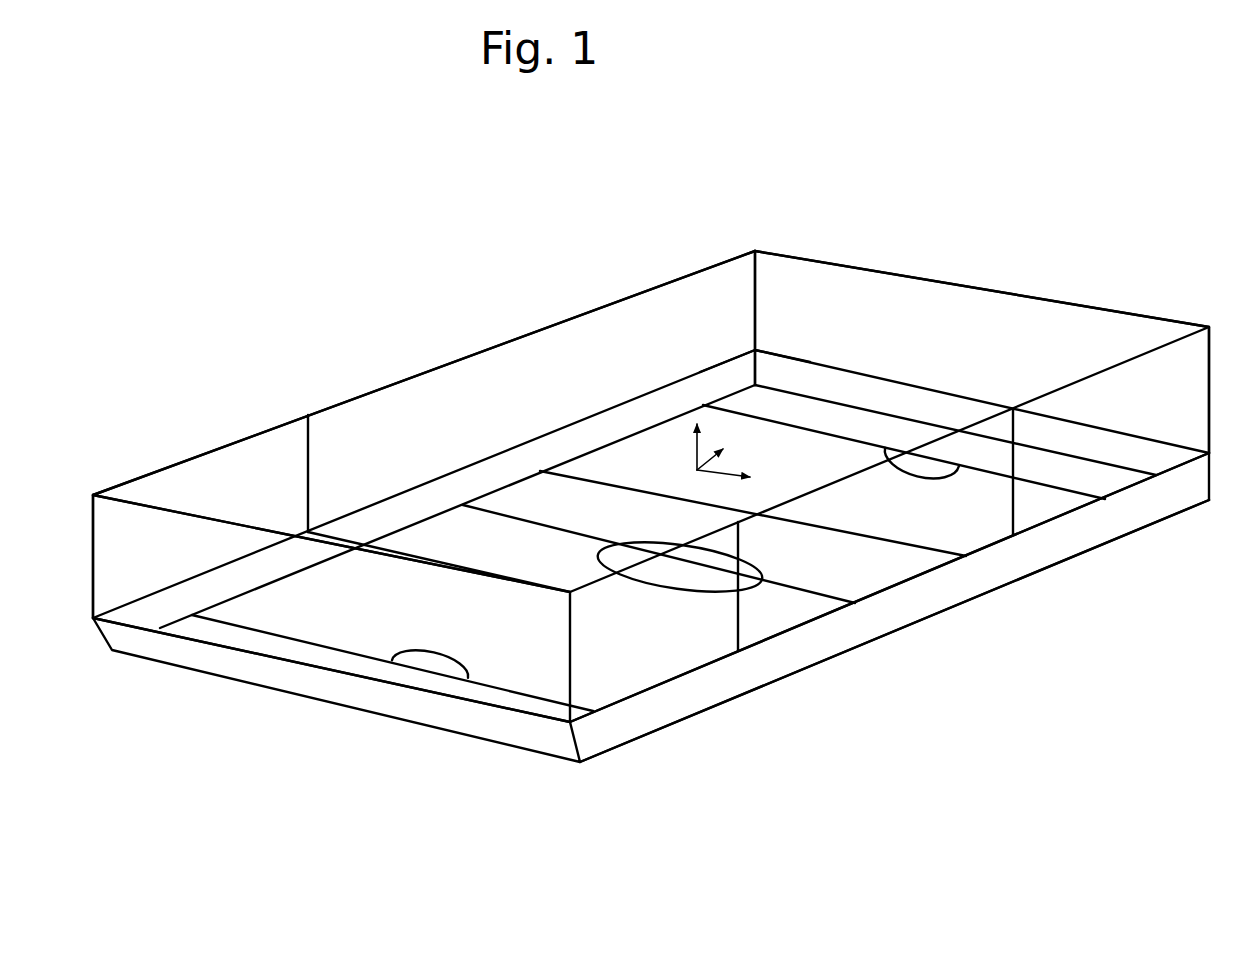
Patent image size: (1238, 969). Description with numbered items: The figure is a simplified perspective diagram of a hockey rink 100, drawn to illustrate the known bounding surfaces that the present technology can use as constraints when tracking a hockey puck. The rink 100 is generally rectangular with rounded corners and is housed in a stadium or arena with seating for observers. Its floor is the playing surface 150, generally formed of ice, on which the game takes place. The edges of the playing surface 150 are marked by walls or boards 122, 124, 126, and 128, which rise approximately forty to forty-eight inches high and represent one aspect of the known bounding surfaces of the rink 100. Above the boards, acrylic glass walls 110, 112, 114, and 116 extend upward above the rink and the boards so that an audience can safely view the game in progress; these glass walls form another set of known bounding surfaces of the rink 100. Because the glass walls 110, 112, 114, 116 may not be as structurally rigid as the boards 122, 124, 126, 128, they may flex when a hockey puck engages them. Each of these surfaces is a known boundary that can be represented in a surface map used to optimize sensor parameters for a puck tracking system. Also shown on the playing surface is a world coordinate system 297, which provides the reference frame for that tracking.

The hockey rink 100 is at (438, 220).
The acrylic glass wall 110 is at (258, 435).
The acrylic glass wall 112 is at (1043, 397).
The acrylic glass wall 114 is at (860, 263).
The acrylic glass wall 116 is at (330, 542).
The board 122 is at (757, 349).
The board 124 is at (498, 466).
The board 126 is at (303, 658).
The board 128 is at (920, 598).
The playing surface 150 is at (621, 508).
The world coordinate system 297 is at (743, 468).